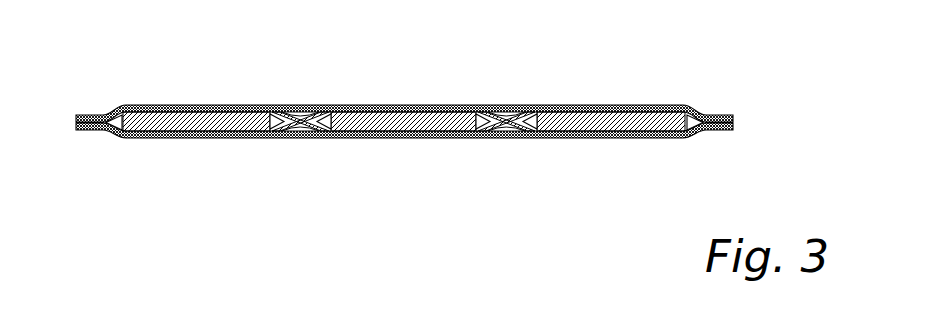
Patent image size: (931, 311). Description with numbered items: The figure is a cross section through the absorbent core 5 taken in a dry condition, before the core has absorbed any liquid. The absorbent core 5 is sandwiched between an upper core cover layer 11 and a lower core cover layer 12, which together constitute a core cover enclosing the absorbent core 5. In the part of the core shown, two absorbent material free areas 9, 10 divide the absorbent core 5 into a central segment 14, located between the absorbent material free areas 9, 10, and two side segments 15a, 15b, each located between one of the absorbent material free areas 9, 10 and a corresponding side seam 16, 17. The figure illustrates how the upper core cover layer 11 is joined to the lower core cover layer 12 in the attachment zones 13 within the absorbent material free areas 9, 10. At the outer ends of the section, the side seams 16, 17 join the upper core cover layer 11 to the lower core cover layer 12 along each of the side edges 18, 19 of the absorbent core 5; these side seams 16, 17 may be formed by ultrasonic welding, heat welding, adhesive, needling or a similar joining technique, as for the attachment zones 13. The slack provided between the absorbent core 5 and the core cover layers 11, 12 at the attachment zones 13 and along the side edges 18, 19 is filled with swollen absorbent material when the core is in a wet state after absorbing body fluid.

The absorbent core 5 is at (408, 110).
The absorbent material free area 9 is at (278, 138).
The absorbent material free area 10 is at (487, 138).
The upper core cover layer 11 is at (578, 107).
The lower core cover layer 12 is at (607, 138).
The attachment zone 13 is at (417, 120).
The central segment 14 is at (400, 108).
The side segment 15a is at (192, 106).
The side segment 15b is at (650, 107).
The side seam 16 is at (88, 110).
The side seam 17 is at (720, 110).
The side edge 18 is at (104, 131).
The side edge 19 is at (706, 131).